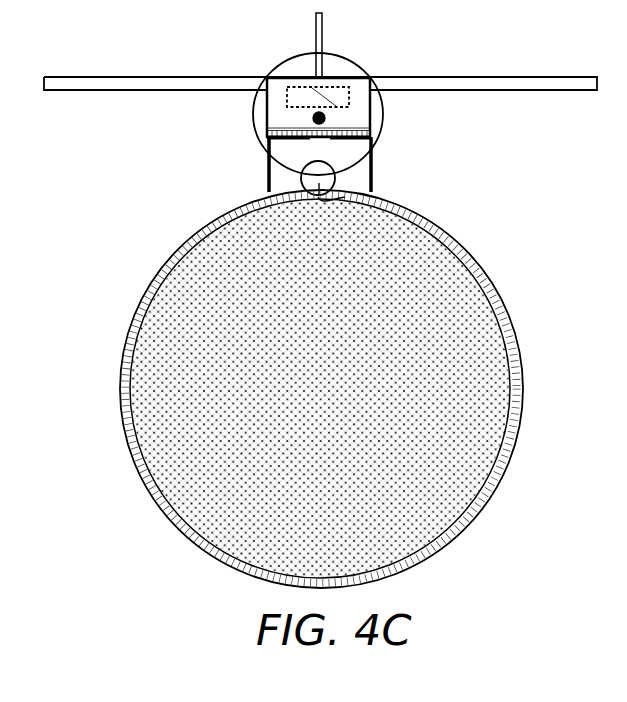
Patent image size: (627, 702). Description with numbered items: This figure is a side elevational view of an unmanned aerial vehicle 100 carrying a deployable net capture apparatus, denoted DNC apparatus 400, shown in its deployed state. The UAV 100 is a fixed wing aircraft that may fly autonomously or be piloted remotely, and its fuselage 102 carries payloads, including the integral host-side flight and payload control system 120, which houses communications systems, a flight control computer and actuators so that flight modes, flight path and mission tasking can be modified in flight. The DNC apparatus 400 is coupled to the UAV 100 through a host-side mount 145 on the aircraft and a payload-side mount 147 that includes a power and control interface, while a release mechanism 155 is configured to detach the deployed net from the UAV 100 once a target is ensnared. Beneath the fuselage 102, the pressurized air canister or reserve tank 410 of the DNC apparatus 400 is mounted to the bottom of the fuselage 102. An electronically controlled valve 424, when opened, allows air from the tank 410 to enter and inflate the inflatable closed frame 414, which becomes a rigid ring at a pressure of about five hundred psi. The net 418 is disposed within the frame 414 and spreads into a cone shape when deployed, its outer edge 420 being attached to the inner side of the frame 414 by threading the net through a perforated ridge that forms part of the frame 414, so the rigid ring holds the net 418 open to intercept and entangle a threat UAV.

The unmanned aerial vehicle 100 is at (269, 24).
The fuselage 102 is at (265, 106).
The host-side flight and payload control system 120 is at (350, 95).
The host-side mount 145 is at (268, 132).
The payload-side mount 147 is at (268, 136).
The release mechanism 155 is at (307, 137).
The DNC apparatus 400 is at (190, 181).
The pressurized air canister or reserve tank 410 is at (373, 163).
The inflatable closed frame 414 is at (523, 388).
The net 418 is at (452, 457).
The outer edge of the net 420 is at (470, 503).
The electronically controlled valve 424 is at (345, 197).